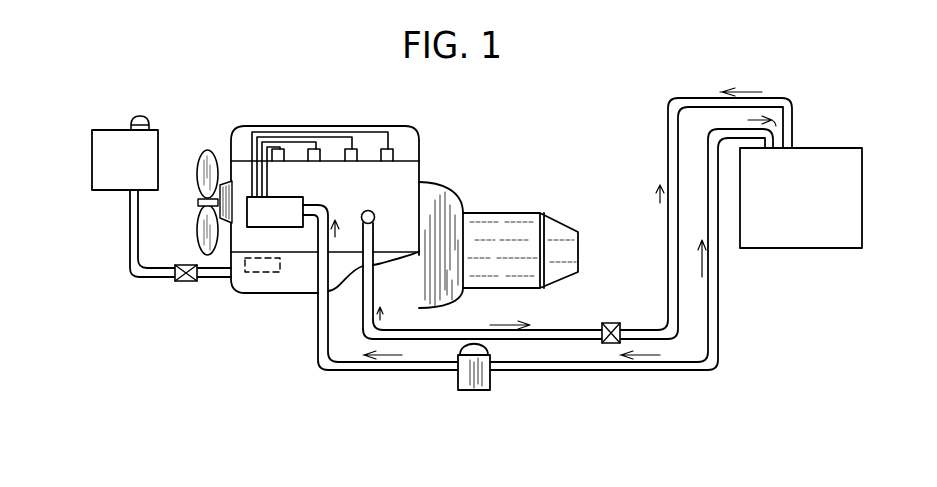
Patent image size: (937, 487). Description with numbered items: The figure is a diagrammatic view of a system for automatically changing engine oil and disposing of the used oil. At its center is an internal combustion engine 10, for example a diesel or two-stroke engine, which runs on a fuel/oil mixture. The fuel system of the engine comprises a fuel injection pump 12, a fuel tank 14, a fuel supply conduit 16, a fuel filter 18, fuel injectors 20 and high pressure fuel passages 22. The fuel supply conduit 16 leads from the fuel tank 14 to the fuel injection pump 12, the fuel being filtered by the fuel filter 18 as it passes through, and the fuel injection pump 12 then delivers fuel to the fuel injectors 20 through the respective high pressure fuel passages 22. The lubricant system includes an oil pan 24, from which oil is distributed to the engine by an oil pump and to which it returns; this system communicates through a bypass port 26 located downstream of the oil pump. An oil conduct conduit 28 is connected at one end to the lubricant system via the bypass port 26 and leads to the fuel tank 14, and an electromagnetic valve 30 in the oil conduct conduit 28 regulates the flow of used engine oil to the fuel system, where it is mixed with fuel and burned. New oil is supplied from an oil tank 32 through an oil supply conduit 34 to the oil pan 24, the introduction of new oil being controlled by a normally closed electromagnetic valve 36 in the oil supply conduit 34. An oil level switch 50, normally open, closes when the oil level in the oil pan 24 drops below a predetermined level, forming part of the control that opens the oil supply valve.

The internal combustion engine 10 is at (433, 137).
The fuel injection pump 12 is at (325, 220).
The fuel tank 14 is at (808, 249).
The fuel supply conduit 16 is at (585, 372).
The fuel filter 18 is at (471, 392).
The fuel injectors 20 is at (278, 149).
The high pressure fuel passages 22 is at (252, 138).
The oil pan 24 is at (270, 295).
The bypass port 26 is at (369, 210).
The oil conduct conduit 28 is at (578, 329).
The electromagnetic valve 30 is at (614, 323).
The oil tank 32 is at (114, 131).
The oil supply conduit 34 is at (136, 279).
The electromagnetic valve 36 is at (184, 283).
The oil level switch 50 is at (250, 273).